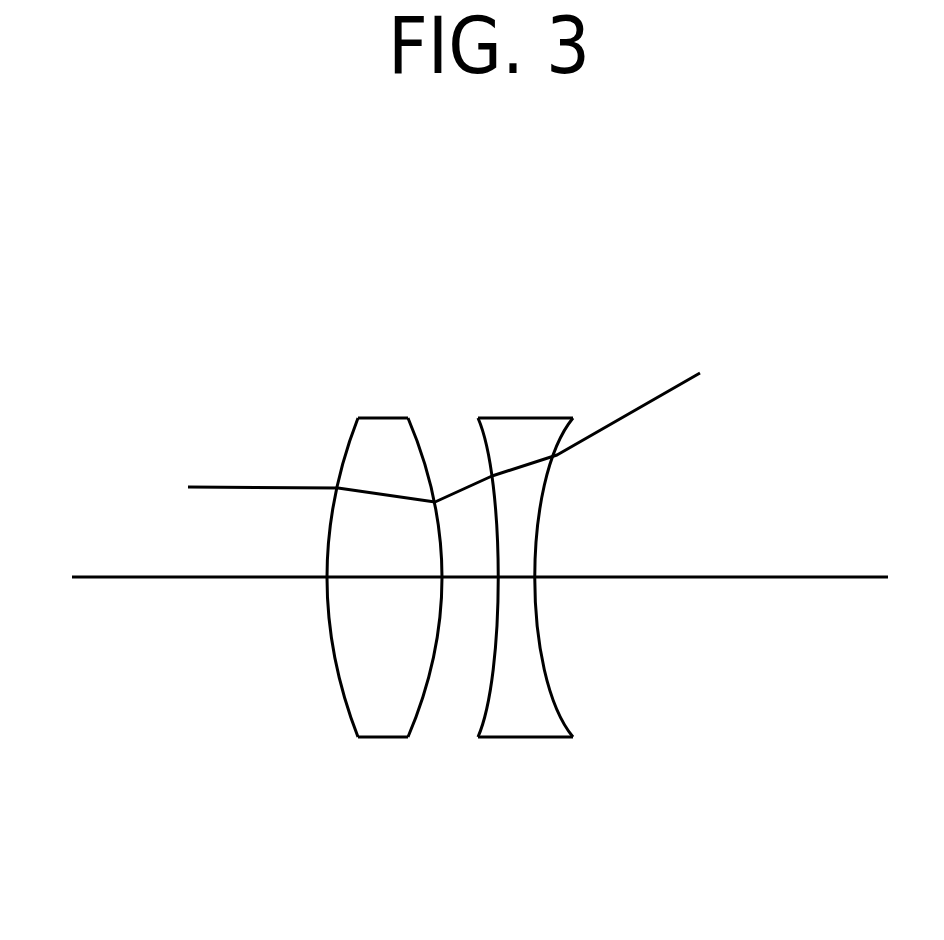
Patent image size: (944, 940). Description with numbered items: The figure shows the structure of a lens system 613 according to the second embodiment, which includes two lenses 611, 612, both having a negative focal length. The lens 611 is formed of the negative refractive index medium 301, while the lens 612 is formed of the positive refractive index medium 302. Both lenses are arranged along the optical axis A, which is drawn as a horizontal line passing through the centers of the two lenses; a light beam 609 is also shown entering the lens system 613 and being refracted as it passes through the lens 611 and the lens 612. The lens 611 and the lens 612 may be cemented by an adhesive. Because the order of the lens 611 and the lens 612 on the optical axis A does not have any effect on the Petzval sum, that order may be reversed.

The optical axis A is at (108, 577).
The light beam 609 is at (218, 477).
The lens 611 is at (395, 417).
The lens 612 is at (517, 417).
The negative refractive index medium 301 is at (392, 585).
The positive refractive index medium 302 is at (525, 585).
The lens system 613 is at (449, 621).